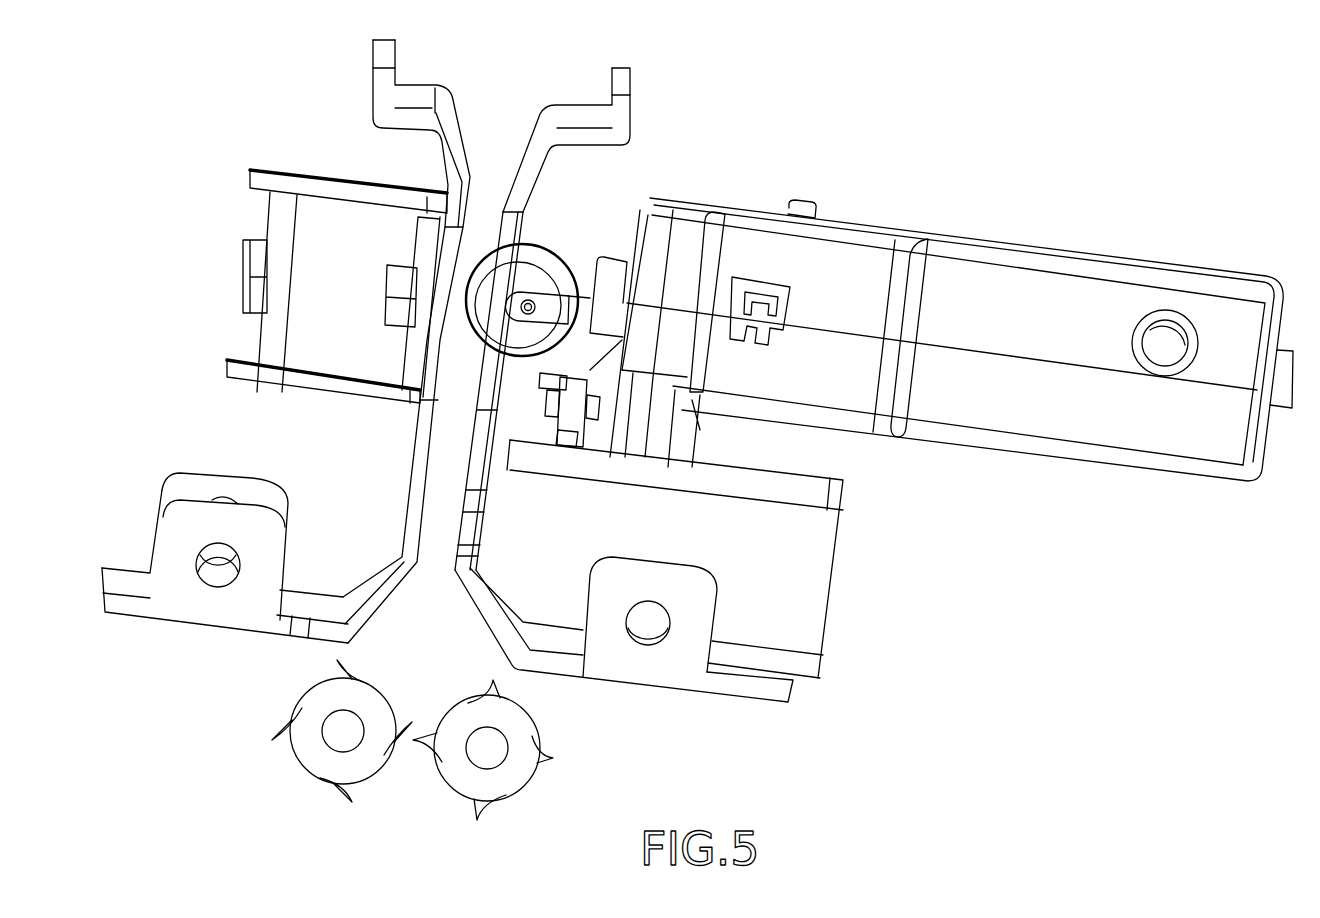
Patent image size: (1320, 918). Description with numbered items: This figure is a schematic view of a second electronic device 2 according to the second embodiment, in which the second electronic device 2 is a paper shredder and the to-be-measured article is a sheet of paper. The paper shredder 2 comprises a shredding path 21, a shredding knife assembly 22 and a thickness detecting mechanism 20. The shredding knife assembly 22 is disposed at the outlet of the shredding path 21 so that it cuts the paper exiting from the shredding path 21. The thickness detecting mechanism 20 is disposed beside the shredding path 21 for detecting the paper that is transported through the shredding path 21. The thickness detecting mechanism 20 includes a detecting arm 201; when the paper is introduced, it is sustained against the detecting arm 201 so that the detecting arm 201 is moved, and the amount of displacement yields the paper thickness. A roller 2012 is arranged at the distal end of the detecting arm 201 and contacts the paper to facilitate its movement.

The second electronic device 2 is at (962, 86).
The thickness detecting mechanism 20 is at (752, 195).
The detecting arm 201 is at (551, 297).
The roller 2012 is at (483, 285).
The shredding path 21 is at (490, 120).
The shredding knife assembly 22 is at (312, 708).